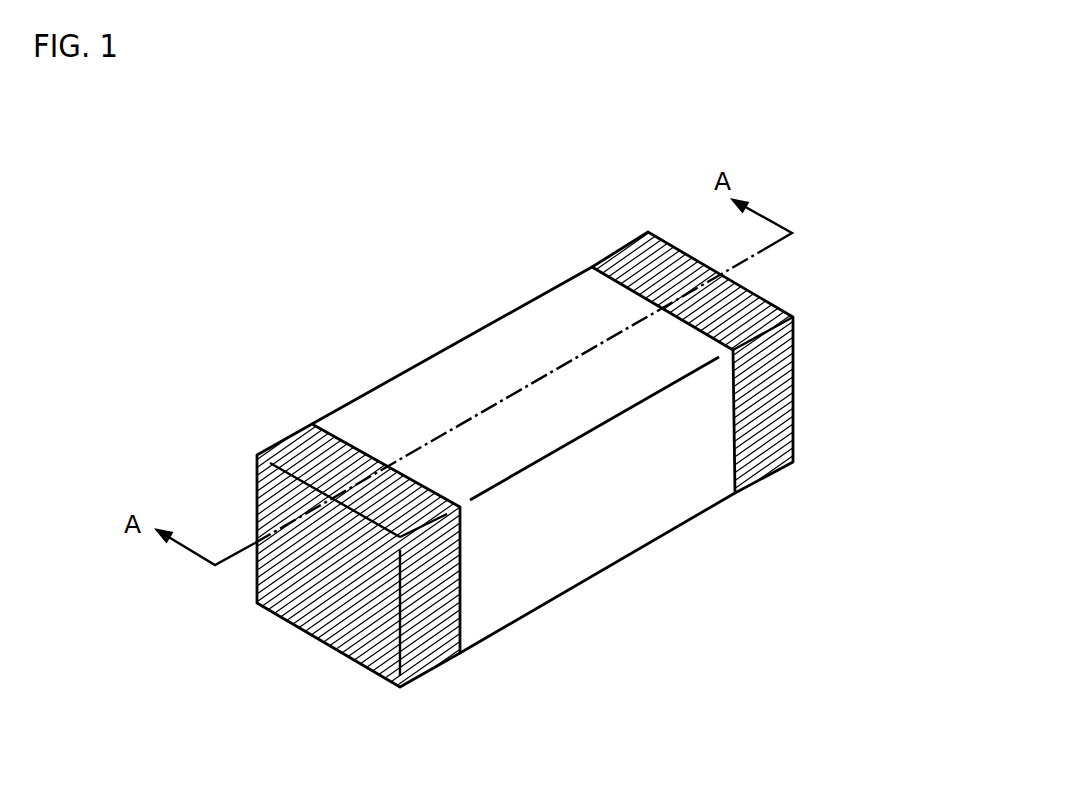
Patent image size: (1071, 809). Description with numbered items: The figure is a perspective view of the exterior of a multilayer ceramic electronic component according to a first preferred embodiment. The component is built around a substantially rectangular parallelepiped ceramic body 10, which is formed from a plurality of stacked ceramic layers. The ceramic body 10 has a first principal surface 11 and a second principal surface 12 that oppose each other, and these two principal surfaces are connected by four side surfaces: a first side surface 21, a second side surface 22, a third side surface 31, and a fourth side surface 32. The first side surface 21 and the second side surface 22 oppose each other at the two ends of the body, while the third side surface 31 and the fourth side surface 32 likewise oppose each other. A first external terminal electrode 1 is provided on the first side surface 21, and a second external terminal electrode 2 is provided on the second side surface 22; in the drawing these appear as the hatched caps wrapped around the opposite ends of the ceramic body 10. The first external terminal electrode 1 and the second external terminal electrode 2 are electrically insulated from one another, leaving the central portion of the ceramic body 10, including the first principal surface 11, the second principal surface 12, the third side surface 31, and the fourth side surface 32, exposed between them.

The first external terminal electrode 1 is at (571, 417).
The ceramic body 10 is at (518, 450).
The first principal surface 11 is at (467, 347).
The second principal surface 12 is at (528, 587).
The third side surface 31 is at (392, 403).
The fourth side surface 32 is at (610, 532).
The second external terminal electrode 2 is at (571, 417).
The first side surface 21 is at (307, 622).
The second side surface 22 is at (795, 367).